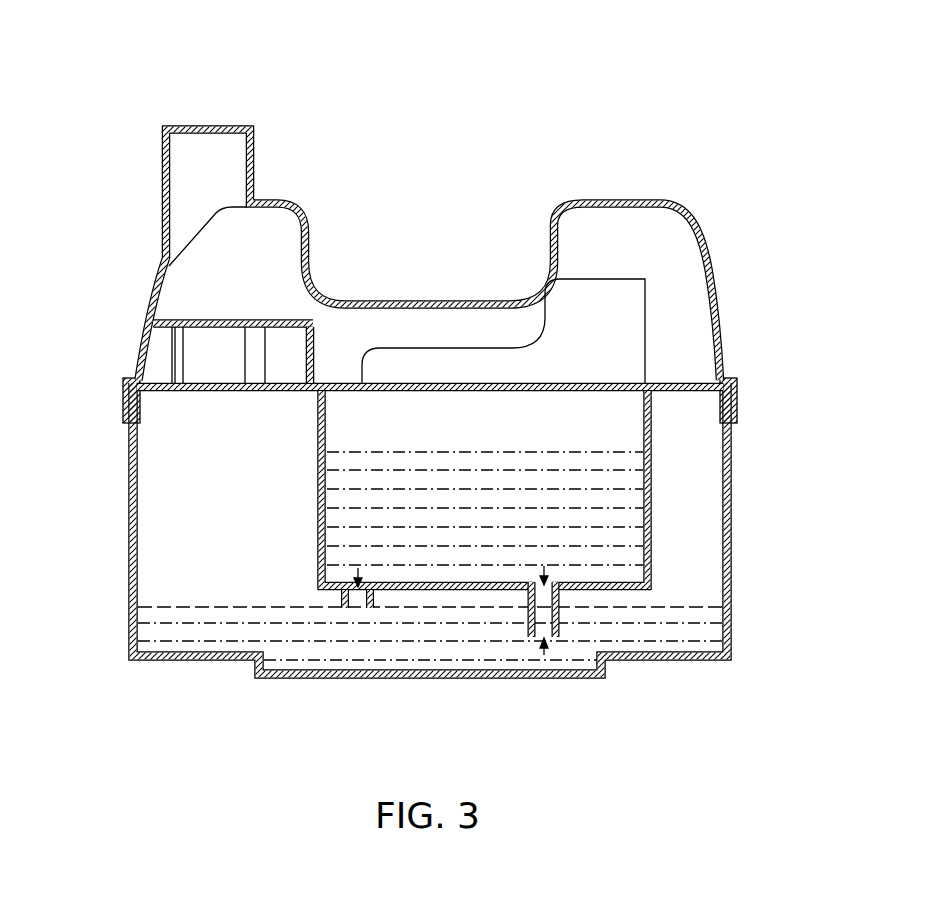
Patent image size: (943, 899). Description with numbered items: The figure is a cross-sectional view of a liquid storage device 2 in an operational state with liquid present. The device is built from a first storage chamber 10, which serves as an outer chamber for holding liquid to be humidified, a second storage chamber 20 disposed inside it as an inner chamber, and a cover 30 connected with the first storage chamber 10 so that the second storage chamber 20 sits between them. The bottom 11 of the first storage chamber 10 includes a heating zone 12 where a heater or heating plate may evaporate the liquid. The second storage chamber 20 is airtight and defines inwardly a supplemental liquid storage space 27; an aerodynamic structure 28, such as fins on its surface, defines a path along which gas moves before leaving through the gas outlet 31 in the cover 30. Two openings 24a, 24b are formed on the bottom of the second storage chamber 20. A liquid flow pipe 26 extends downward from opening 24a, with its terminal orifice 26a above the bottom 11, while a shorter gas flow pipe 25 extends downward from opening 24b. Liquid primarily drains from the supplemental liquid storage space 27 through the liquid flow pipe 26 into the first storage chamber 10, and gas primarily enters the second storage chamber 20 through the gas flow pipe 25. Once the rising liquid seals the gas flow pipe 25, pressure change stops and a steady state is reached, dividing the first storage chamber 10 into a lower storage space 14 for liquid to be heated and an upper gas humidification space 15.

The liquid storage device 2 is at (722, 102).
The first storage chamber 10 is at (128, 528).
The bottom 11 is at (196, 662).
The heating zone 12 is at (330, 680).
The storage space for liquid to be heated 14 is at (146, 636).
The gas humidification space 15 is at (156, 450).
The second storage chamber 20 is at (318, 436).
The opening 24a is at (547, 565).
The opening 24b is at (356, 570).
The gas flow pipe 25 is at (342, 600).
The liquid flow pipe 26 is at (562, 598).
The terminal orifice 26a is at (545, 656).
The supplemental liquid storage space 27 is at (629, 418).
The aerodynamic structure 28 is at (628, 342).
The cover 30 is at (706, 265).
The gas outlet 31 is at (206, 133).